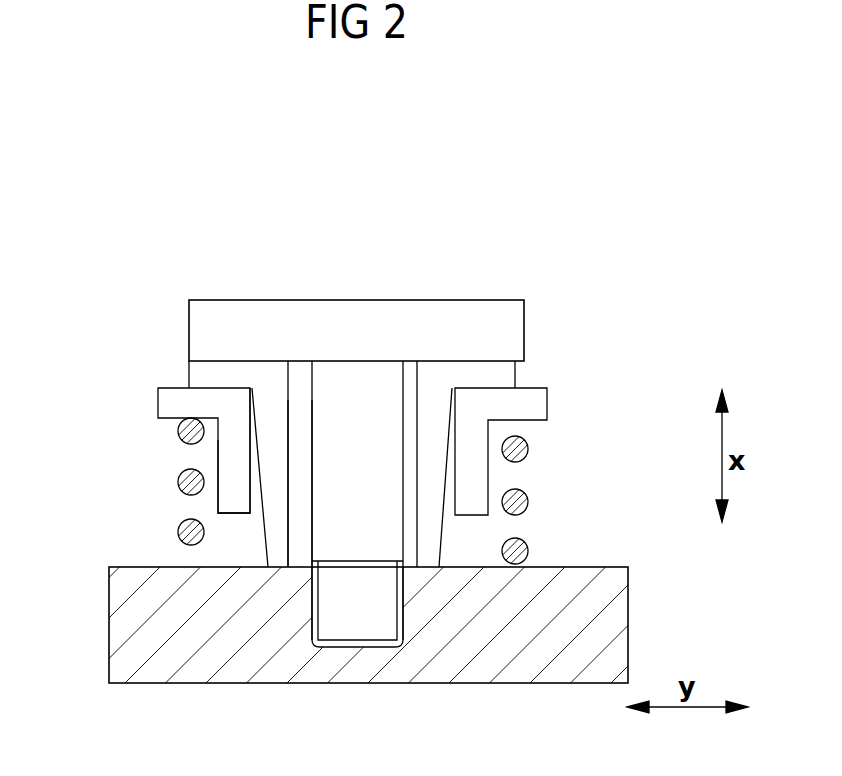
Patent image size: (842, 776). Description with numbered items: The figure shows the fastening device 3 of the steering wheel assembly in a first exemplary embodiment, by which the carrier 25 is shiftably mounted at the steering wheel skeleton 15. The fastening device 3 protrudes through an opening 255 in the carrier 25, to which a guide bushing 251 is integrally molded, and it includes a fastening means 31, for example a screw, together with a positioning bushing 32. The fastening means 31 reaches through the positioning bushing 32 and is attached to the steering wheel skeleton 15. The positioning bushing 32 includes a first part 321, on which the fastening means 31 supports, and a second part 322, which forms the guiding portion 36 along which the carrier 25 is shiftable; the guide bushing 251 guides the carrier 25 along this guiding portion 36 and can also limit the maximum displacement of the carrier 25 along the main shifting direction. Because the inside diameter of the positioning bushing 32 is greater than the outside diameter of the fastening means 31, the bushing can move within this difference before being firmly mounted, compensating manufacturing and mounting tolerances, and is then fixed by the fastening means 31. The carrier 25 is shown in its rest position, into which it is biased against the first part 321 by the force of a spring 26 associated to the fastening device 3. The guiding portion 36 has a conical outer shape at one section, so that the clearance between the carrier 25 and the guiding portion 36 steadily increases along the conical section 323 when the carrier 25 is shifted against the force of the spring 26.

The fastening device 3 is at (354, 254).
The fastening means 31 is at (390, 276).
The positioning bushing 32 is at (534, 366).
The first part 321 is at (483, 380).
The second part 322 is at (282, 512).
The conical section 323 is at (224, 571).
The carrier 25 is at (186, 399).
The guide bushing 251 is at (235, 493).
The opening 255 is at (258, 338).
The spring 26 is at (182, 477).
The guiding portion 36 is at (442, 545).
The steering wheel skeleton 15 is at (568, 662).